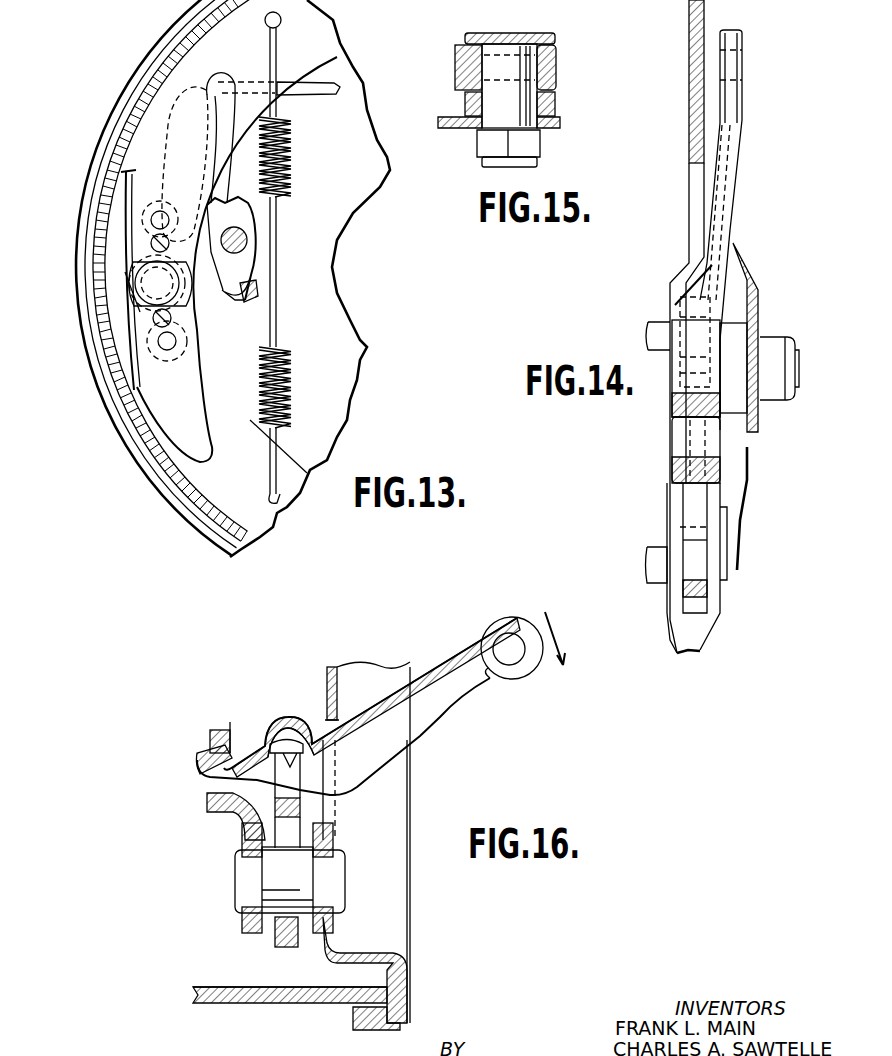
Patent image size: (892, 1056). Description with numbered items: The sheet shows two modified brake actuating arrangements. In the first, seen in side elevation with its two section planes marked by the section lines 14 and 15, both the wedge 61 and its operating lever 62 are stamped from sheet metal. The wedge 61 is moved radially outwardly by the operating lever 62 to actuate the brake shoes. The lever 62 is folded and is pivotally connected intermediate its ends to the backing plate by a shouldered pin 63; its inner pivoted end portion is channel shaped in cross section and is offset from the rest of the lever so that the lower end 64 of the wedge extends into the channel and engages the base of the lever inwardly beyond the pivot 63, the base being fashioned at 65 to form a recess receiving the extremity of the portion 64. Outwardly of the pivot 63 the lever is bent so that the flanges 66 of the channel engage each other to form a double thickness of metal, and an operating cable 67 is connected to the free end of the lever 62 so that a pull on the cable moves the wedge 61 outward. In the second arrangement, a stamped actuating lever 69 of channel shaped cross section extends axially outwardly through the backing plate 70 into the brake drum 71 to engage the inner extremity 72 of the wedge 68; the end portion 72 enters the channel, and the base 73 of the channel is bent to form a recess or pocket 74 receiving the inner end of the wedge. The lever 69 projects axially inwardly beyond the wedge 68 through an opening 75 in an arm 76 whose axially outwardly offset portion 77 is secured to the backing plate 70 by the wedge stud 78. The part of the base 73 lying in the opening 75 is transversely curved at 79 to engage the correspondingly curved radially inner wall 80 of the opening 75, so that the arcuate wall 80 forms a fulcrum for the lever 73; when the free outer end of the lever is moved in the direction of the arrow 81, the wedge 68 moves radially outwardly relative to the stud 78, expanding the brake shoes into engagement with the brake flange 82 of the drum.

In FIG. 13, the section line 14- 14 is at (273, 47).
In FIG. 13, the section line 15- 15 is at (268, 236).
In FIG. 13, the wedge 61 is at (118, 277).
In FIG. 14, the wedge 61 is at (693, 510).
In FIG. 13, the operating lever 62 is at (260, 214).
In FIG. 15, the operating lever 62 is at (556, 70).
In FIG. 14, the operating lever 62 is at (723, 207).
In FIG. 13, the shouldered pin 63 is at (222, 230).
In FIG. 15, the shouldered pin 63 is at (556, 108).
In FIG. 14, the shouldered pin 63 is at (663, 383).
In FIG. 13, the lower end of the wedge 64 is at (234, 290).
In FIG. 14, the lower end of the wedge 64 is at (667, 450).
In FIG. 13, the recess in lever base 65 is at (252, 281).
In FIG. 14, the recess in lever base 65 is at (703, 443).
In FIG. 15, the flanges 66 is at (455, 82).
In FIG. 14, the flanges 66 is at (667, 480).
In FIG. 13, the operating cable 67 is at (327, 89).
In FIG. 16, the wedge 68 is at (300, 808).
In FIG. 16, the actuating lever 69 is at (383, 695).
In FIG. 16, the backing plate 70 is at (337, 668).
In FIG. 16, the brake drum 71 is at (248, 978).
In FIG. 16, the inner extremity of the wedge 72 is at (313, 757).
In FIG. 16, the base of the channel 73 is at (447, 660).
In FIG. 16, the recess or pocket 74 is at (277, 742).
In FIG. 16, the opening 75 is at (212, 794).
In FIG. 16, the arm 76 is at (210, 742).
In FIG. 16, the axially outwardly offset portion 77 is at (243, 923).
In FIG. 16, the wedge stud 78 is at (297, 882).
In FIG. 16, the transversely curved portion 79 is at (205, 766).
In FIG. 16, the radially inner wall of the opening 80 is at (230, 732).
In FIG. 16, the arrow 81 is at (553, 630).
In FIG. 16, the brake flange 82 is at (300, 1003).